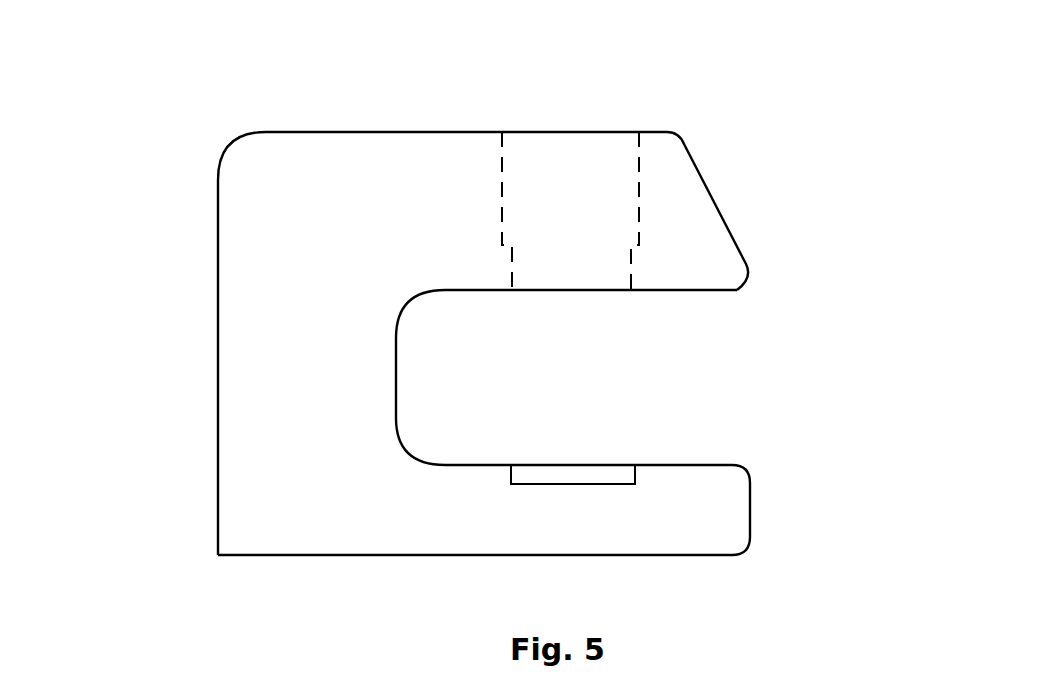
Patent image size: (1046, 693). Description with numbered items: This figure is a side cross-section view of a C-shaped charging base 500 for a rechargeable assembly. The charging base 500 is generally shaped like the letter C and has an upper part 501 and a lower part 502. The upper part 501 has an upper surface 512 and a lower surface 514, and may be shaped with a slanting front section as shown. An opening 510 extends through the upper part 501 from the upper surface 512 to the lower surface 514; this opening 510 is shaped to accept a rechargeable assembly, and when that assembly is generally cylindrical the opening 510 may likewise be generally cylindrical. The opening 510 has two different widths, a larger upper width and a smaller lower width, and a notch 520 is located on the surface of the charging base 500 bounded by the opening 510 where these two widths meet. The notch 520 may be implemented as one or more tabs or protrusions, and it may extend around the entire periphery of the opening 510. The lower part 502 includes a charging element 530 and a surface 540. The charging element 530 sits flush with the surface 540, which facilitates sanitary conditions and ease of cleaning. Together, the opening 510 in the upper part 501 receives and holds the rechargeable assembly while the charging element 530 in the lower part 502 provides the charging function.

The charging base 500 is at (165, 148).
The upper part 501 is at (455, 172).
The opening 510 is at (570, 182).
The upper surface 512 is at (661, 130).
The lower surface 514 is at (678, 293).
The notch 520 is at (515, 245).
The charging element 530 is at (555, 470).
The surface 540 is at (678, 465).
The lower part 502 is at (670, 523).